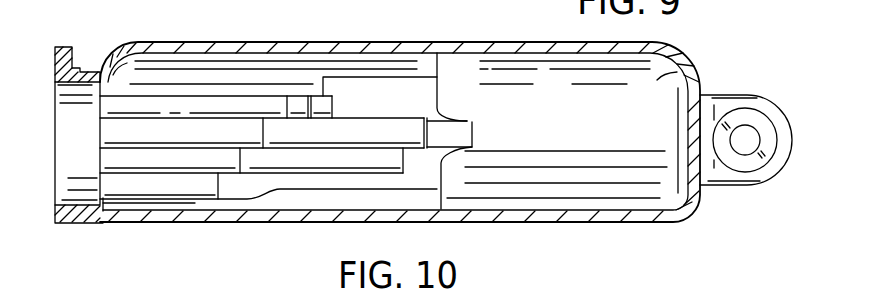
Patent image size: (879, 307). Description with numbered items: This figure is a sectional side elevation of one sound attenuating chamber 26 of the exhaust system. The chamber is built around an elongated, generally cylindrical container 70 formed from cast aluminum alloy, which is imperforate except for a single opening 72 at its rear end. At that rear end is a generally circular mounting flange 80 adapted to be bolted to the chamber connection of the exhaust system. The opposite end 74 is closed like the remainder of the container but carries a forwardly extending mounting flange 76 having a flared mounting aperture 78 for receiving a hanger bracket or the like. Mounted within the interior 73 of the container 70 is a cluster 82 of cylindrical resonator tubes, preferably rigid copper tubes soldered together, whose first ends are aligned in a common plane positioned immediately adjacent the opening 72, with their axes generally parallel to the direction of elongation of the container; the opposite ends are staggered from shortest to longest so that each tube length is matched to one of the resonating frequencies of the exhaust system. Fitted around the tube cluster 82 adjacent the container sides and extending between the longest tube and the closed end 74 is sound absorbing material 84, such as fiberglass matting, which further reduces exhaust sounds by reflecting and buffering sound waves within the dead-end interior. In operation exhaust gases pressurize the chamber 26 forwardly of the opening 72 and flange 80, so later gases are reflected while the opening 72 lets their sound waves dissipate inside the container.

The sound attenuating chamber 26 is at (212, 30).
The cylindrical container 70 is at (313, 39).
The opening 72 is at (103, 212).
The interior 73 is at (567, 208).
The opposite end 74 is at (690, 82).
The mounting flange 76 is at (765, 108).
The mounting aperture 78 is at (752, 148).
The mounting flange 80 is at (68, 66).
The cluster 82 is at (197, 206).
The sound absorbing material 84 is at (463, 73).